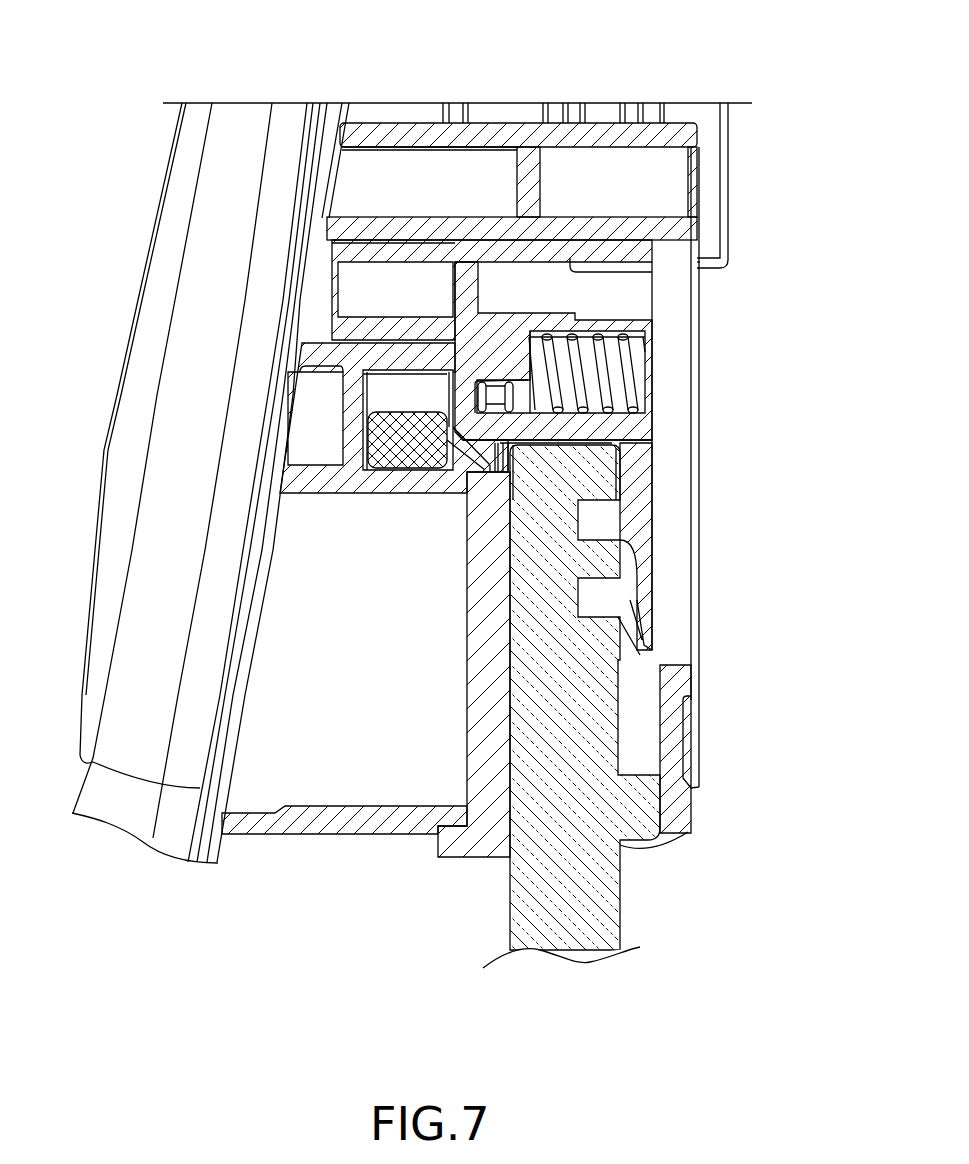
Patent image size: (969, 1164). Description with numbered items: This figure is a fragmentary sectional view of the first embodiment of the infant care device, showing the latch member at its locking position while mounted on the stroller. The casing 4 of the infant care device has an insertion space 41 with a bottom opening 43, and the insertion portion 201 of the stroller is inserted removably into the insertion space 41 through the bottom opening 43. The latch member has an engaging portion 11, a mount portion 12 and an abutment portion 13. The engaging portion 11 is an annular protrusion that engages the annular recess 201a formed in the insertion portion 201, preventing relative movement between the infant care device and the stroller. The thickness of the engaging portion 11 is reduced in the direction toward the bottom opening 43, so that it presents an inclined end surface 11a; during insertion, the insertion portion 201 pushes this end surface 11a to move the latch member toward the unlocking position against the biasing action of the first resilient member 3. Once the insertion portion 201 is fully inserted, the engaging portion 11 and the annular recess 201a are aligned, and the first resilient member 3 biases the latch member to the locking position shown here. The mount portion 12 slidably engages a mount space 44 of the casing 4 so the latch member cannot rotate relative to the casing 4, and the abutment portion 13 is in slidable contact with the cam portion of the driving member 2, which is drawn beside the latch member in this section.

The driving member 2 is at (387, 425).
The first resilient member 3 is at (613, 385).
The casing 4 is at (273, 317).
The engaging portion 11 is at (590, 528).
The inclined end surface 11a is at (602, 593).
The mount portion 12 is at (390, 243).
The abutment portion 13 is at (462, 392).
The insertion space 41 is at (668, 308).
The bottom opening 43 is at (627, 853).
The mount space 44 is at (327, 288).
The insertion portion 201 is at (565, 702).
The annular recess 201a is at (592, 610).